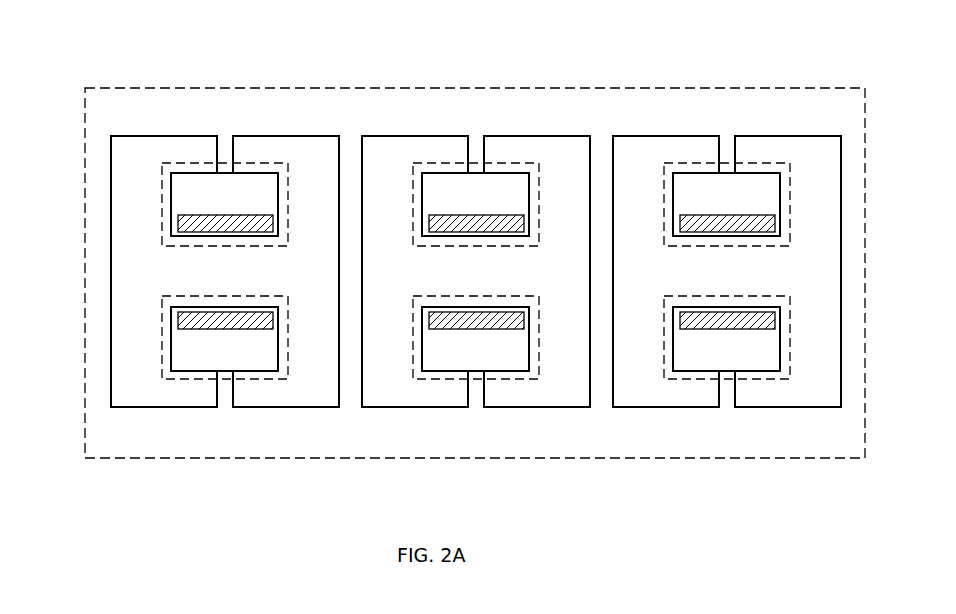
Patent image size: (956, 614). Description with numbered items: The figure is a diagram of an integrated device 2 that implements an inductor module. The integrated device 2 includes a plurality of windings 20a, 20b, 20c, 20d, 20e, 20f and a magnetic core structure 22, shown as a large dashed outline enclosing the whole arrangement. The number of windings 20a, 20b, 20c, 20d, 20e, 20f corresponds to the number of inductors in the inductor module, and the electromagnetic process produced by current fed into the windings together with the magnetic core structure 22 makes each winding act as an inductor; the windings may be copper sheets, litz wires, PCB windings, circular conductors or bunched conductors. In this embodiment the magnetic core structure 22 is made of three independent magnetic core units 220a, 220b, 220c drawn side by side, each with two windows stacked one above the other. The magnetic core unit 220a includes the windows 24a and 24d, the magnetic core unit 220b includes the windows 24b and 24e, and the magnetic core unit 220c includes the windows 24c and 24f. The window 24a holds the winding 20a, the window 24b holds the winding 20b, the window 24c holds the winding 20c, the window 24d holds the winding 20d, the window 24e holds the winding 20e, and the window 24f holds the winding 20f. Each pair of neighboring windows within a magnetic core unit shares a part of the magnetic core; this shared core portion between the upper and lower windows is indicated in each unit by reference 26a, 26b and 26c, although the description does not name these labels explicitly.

The integrated device 2 is at (158, 26).
The magnetic core structure 22 is at (750, 88).
The magnetic core unit 220a is at (112, 136).
The magnetic core unit 220b is at (453, 231).
The magnetic core unit 220c is at (704, 231).
The window 24a is at (262, 162).
The window 24b is at (486, 179).
The window 24c is at (737, 179).
The window 24d is at (262, 296).
The window 24e is at (486, 314).
The window 24f is at (735, 314).
The winding 20a is at (226, 214).
The winding 20b is at (476, 204).
The winding 20c is at (727, 204).
The winding 20d is at (210, 330).
The winding 20e is at (476, 341).
The winding 20f is at (727, 341).
The first gap 26a is at (210, 281).
The second gap 26b is at (416, 259).
The third gap 26c is at (667, 259).